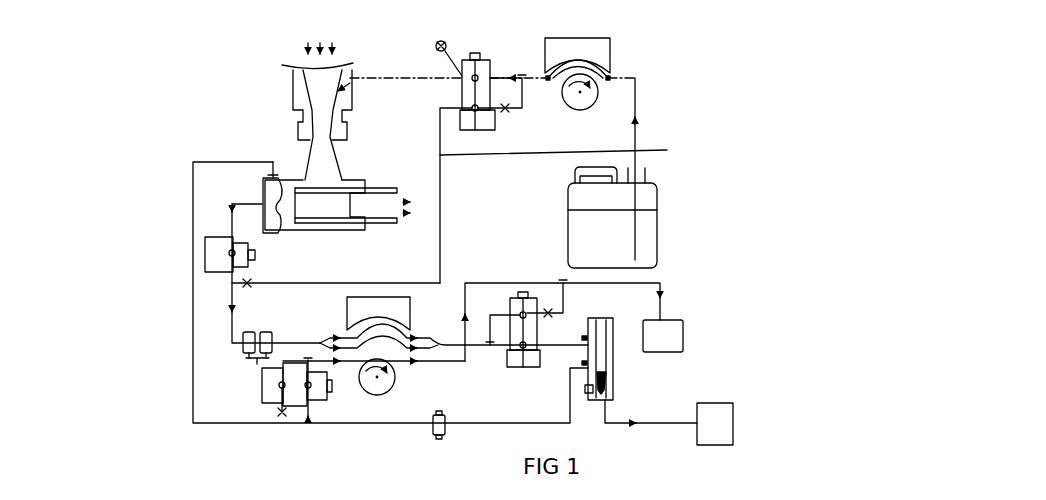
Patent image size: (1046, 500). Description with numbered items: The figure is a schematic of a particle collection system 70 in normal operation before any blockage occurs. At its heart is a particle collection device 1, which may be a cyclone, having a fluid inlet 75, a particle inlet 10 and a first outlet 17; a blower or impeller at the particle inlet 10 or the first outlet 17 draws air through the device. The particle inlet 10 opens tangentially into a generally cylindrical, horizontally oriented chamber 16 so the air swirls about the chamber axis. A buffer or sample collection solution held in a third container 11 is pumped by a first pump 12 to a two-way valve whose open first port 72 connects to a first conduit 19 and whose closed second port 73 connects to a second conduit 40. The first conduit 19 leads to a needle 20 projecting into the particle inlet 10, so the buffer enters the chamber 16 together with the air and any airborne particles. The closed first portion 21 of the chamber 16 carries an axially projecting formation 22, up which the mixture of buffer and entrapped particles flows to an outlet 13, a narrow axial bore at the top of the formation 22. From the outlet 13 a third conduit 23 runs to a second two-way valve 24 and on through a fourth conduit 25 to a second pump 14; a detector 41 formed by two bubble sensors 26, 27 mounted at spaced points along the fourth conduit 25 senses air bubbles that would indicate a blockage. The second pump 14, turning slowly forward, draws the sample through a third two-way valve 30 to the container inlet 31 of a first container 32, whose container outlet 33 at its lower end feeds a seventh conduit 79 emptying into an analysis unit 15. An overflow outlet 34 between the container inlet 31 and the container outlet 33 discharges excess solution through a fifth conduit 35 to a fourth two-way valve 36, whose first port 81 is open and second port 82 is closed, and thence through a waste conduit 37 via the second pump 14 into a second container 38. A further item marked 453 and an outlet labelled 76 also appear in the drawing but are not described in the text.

The particle collection system 70 is at (148, 68).
The particle inlet 10 is at (330, 63).
The first conduit 19 is at (388, 77).
The fluid inlet 75 is at (322, 100).
The needle 20 is at (322, 101).
The particle collection device 1 is at (355, 166).
The first port 72 is at (490, 77).
The second port 73 is at (480, 108).
The first pump 12 is at (612, 60).
The third container 11 is at (660, 230).
The second conduit 40 is at (566, 152).
The formation 22 is at (278, 190).
The outlet 13 is at (263, 203).
The third conduit 23 is at (232, 204).
The first portion 21 is at (265, 230).
The first outlet 17 is at (392, 190).
The chamber 16 is at (358, 230).
The housing outlet 76 is at (353, 230).
The second two-way valve 24 is at (205, 262).
The fourth conduit 25 is at (230, 302).
The bubble sensor 26 is at (249, 332).
The bubble sensor 27 is at (267, 332).
The detector 41 is at (257, 364).
The second pump 14 is at (347, 318).
The waste conduit 37 is at (492, 282).
The third two-way valve 30 is at (512, 368).
The overflow outlet 34 is at (585, 372).
The first container 32 is at (613, 328).
The container inlet 31 is at (583, 338).
The container outlet 33 is at (607, 397).
The second container 38 is at (677, 337).
The analysis unit 15 is at (712, 408).
The seventh conduit 79 is at (645, 425).
The fifth conduit 35 is at (495, 427).
The check valve 453 is at (436, 421).
The fourth two-way valve 36 is at (262, 388).
The second port 82 is at (277, 402).
The first port 81 is at (310, 403).